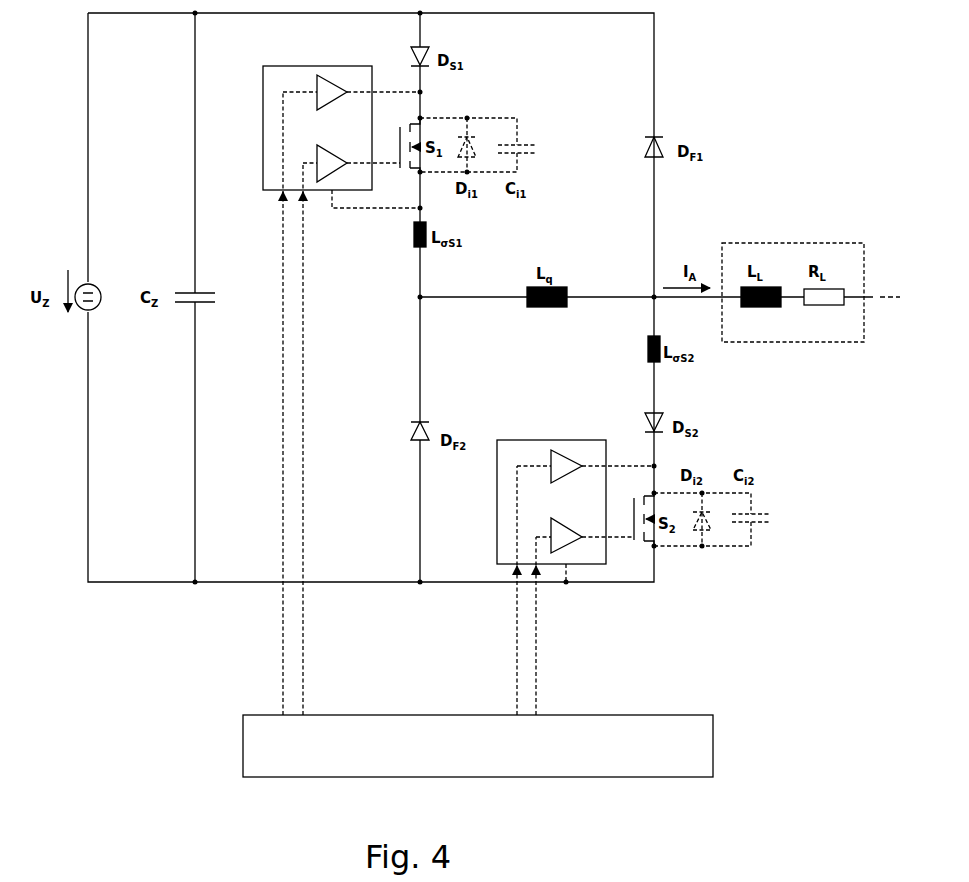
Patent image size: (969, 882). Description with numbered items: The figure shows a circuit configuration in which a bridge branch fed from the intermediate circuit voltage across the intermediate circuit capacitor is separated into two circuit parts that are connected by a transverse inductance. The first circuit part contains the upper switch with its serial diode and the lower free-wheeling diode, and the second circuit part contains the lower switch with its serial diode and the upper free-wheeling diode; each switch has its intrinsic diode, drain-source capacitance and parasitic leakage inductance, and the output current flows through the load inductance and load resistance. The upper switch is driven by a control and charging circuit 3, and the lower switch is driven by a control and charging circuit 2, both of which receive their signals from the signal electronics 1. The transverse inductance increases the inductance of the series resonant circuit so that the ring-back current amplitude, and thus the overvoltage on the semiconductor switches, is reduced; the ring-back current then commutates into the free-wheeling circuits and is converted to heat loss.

The signal electronics 1 is at (283, 741).
The control and charging circuit 2 is at (546, 502).
The control and charging circuit 3 is at (313, 128).